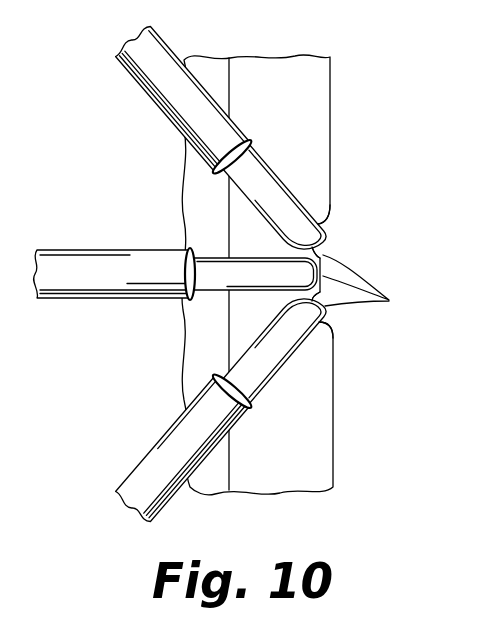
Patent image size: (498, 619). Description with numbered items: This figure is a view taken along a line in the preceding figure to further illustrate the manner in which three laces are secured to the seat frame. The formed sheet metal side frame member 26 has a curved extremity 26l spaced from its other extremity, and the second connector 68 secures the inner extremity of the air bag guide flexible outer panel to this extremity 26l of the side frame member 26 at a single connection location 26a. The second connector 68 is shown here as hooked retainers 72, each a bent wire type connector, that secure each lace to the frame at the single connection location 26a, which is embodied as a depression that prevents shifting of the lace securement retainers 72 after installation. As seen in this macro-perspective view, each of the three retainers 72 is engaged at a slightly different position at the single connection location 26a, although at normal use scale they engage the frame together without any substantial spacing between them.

The side frame member 26 is at (166, 186).
The curved extremity of the side frame member 26l is at (345, 174).
The single connection location 26a is at (302, 238).
The second connector 68 is at (376, 268).
The hooked retainer 72 is at (370, 286).